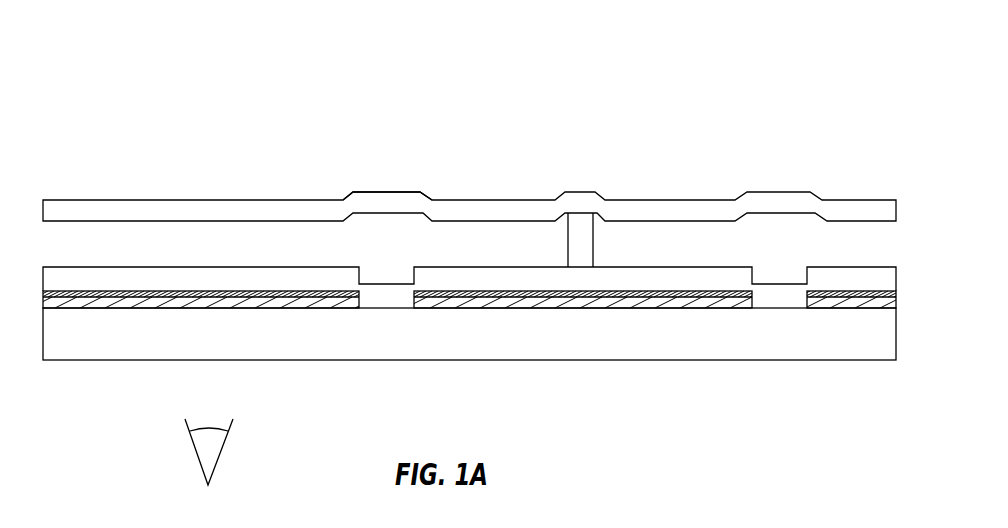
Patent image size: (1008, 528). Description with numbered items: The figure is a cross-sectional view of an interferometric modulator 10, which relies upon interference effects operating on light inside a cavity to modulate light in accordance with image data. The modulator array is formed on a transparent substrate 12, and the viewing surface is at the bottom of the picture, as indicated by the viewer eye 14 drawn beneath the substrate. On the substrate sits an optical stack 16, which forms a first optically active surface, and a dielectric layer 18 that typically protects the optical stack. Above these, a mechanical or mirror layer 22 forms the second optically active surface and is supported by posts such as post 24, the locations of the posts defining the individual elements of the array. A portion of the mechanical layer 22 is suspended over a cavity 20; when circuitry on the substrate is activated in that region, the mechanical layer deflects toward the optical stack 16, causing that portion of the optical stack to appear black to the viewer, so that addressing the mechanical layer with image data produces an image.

The interferometric modulator 10 is at (110, 86).
The transparent substrate 12 is at (700, 360).
The viewer eye 14 is at (193, 455).
The optical stack 16 is at (535, 310).
The dielectric layer 18 is at (345, 266).
The cavity 20 is at (394, 232).
The mechanical layer 22 is at (388, 192).
The post 24 is at (580, 259).